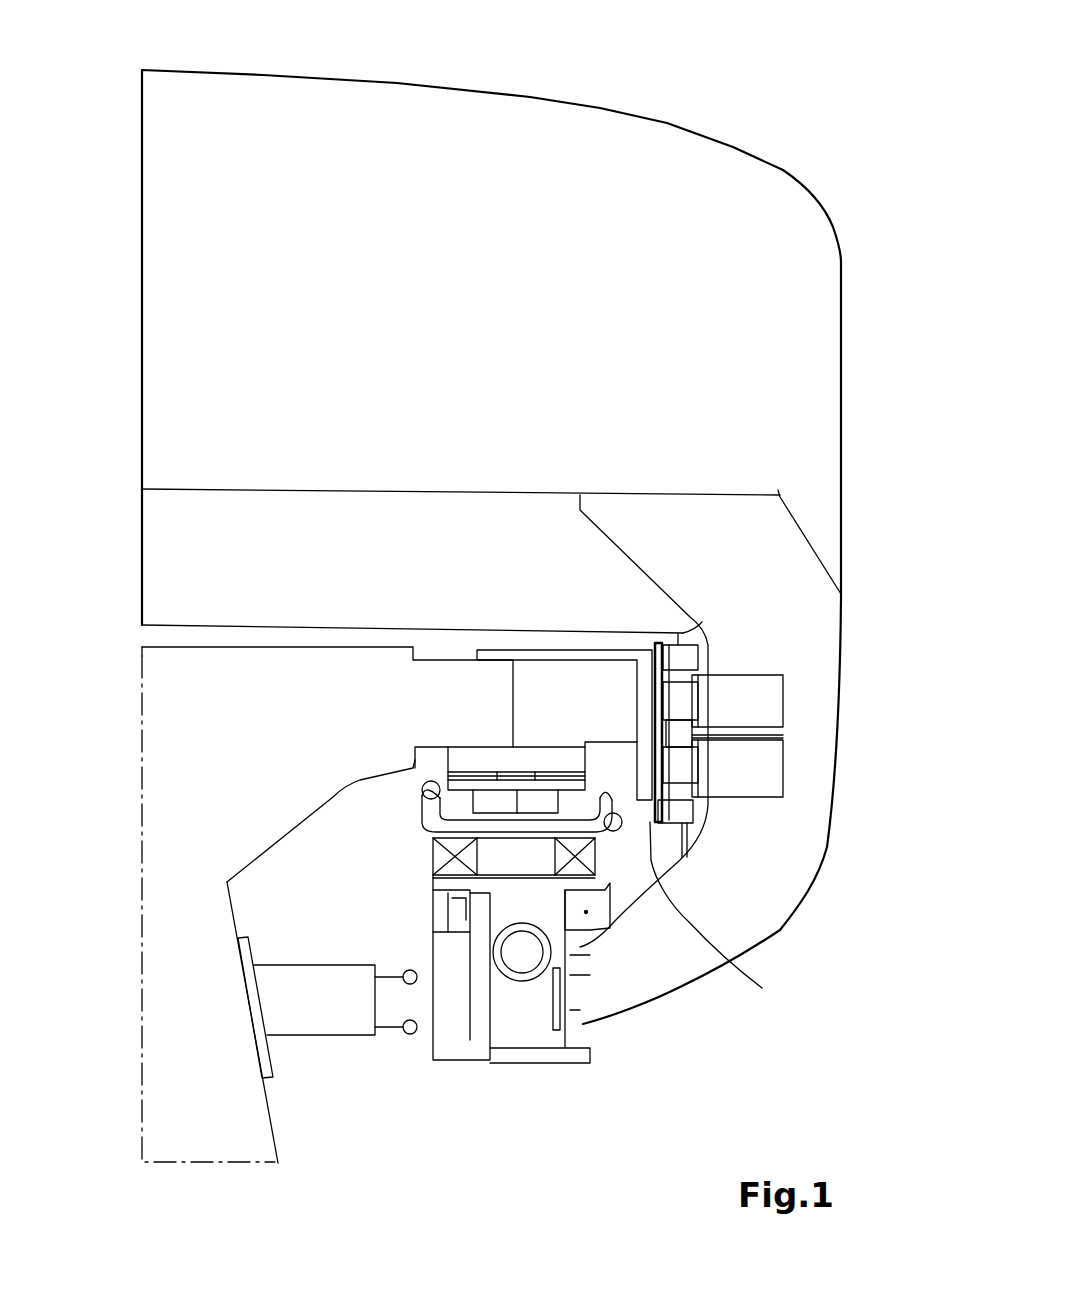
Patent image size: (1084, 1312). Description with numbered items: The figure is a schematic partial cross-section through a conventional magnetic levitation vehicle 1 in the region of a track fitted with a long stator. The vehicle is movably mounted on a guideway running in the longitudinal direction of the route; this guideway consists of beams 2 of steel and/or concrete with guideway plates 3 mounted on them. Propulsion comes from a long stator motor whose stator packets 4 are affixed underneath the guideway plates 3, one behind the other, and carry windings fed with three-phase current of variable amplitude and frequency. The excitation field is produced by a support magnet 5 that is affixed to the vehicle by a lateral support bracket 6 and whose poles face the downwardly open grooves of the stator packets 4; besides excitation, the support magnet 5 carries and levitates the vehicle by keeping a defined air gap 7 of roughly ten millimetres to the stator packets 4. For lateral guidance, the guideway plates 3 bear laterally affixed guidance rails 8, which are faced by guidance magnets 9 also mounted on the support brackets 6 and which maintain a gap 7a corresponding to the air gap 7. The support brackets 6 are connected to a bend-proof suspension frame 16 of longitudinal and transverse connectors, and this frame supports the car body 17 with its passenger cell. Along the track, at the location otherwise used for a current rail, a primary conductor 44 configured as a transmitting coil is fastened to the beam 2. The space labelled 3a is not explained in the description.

The magnetic levitation vehicle 1 is at (512, 85).
The beam 2 is at (175, 1028).
The guideway plate 3 is at (588, 643).
The receiving space 3a is at (533, 733).
The stator packet 4 is at (497, 803).
The support magnet 5 is at (525, 860).
The lateral support bracket 6 is at (773, 614).
The air gap 7 is at (487, 833).
The gap 7a is at (733, 917).
The guidance rail 8 is at (643, 752).
The guidance magnet 9 is at (692, 732).
The suspension frame 16 is at (202, 573).
The car body 17 is at (200, 292).
The primary conductor 44 is at (397, 1040).